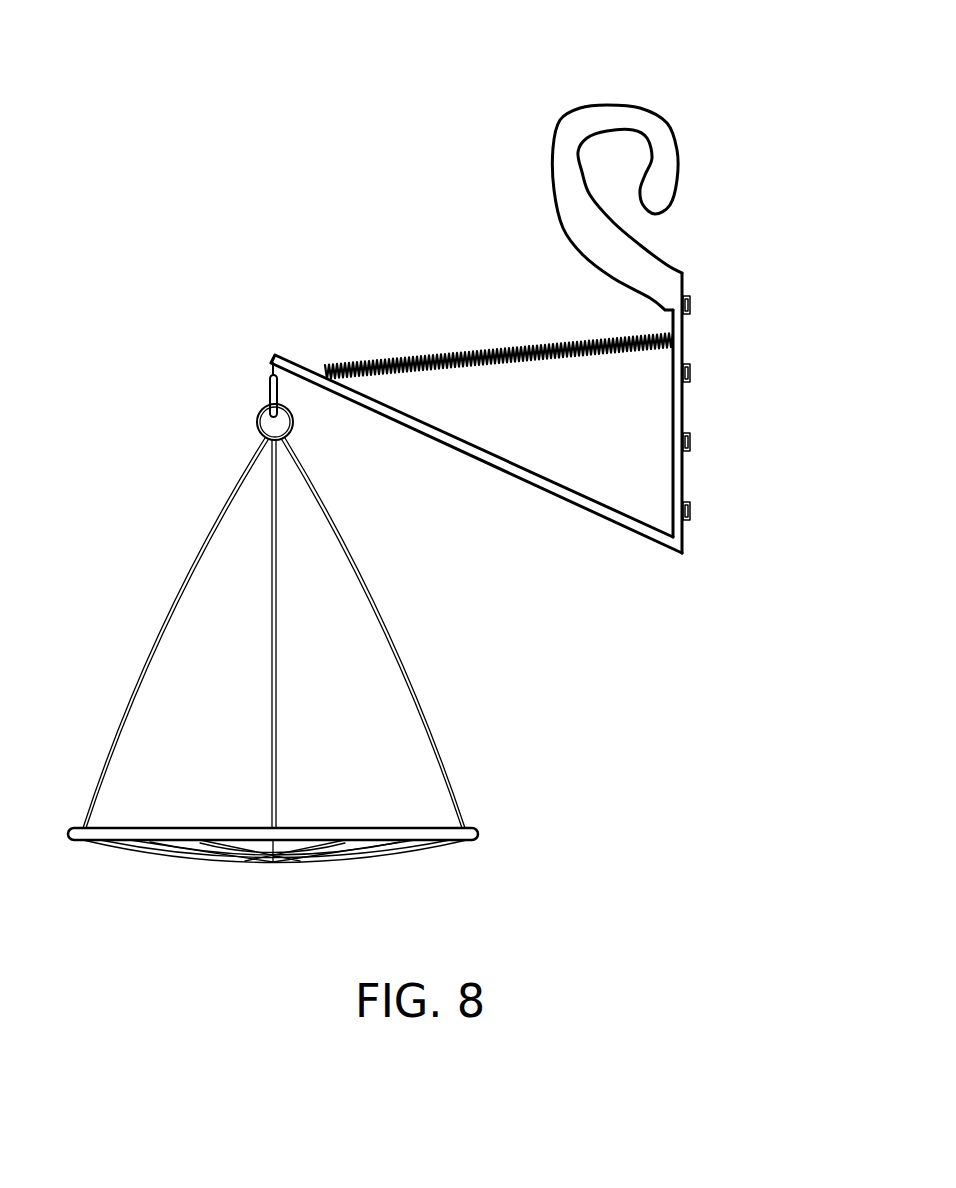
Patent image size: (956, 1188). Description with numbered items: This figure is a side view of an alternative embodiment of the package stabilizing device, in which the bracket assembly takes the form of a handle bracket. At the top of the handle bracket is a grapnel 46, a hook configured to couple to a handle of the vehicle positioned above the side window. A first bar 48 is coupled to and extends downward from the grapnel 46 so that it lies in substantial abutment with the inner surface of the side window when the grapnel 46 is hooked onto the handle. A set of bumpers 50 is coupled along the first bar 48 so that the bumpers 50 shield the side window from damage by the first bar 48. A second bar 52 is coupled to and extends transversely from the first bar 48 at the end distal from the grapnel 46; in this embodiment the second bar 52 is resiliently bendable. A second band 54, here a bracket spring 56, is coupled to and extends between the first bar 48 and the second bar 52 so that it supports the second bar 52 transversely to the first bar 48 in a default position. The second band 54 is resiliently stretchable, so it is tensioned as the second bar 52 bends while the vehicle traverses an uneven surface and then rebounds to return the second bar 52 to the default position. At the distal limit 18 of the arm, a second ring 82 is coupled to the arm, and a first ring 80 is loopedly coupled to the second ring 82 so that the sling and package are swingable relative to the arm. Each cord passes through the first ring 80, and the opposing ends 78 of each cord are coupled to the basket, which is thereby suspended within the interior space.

The distal limit 18 is at (271, 361).
The grapnel 46 is at (605, 112).
The first bar 48 is at (634, 413).
The bumpers 50 is at (690, 305).
The second bar 52 is at (500, 466).
The second band 54 is at (499, 308).
The bracket spring 56 is at (513, 345).
The opposing ends 78 is at (453, 827).
The first ring 80 is at (257, 421).
The second ring 82 is at (269, 397).